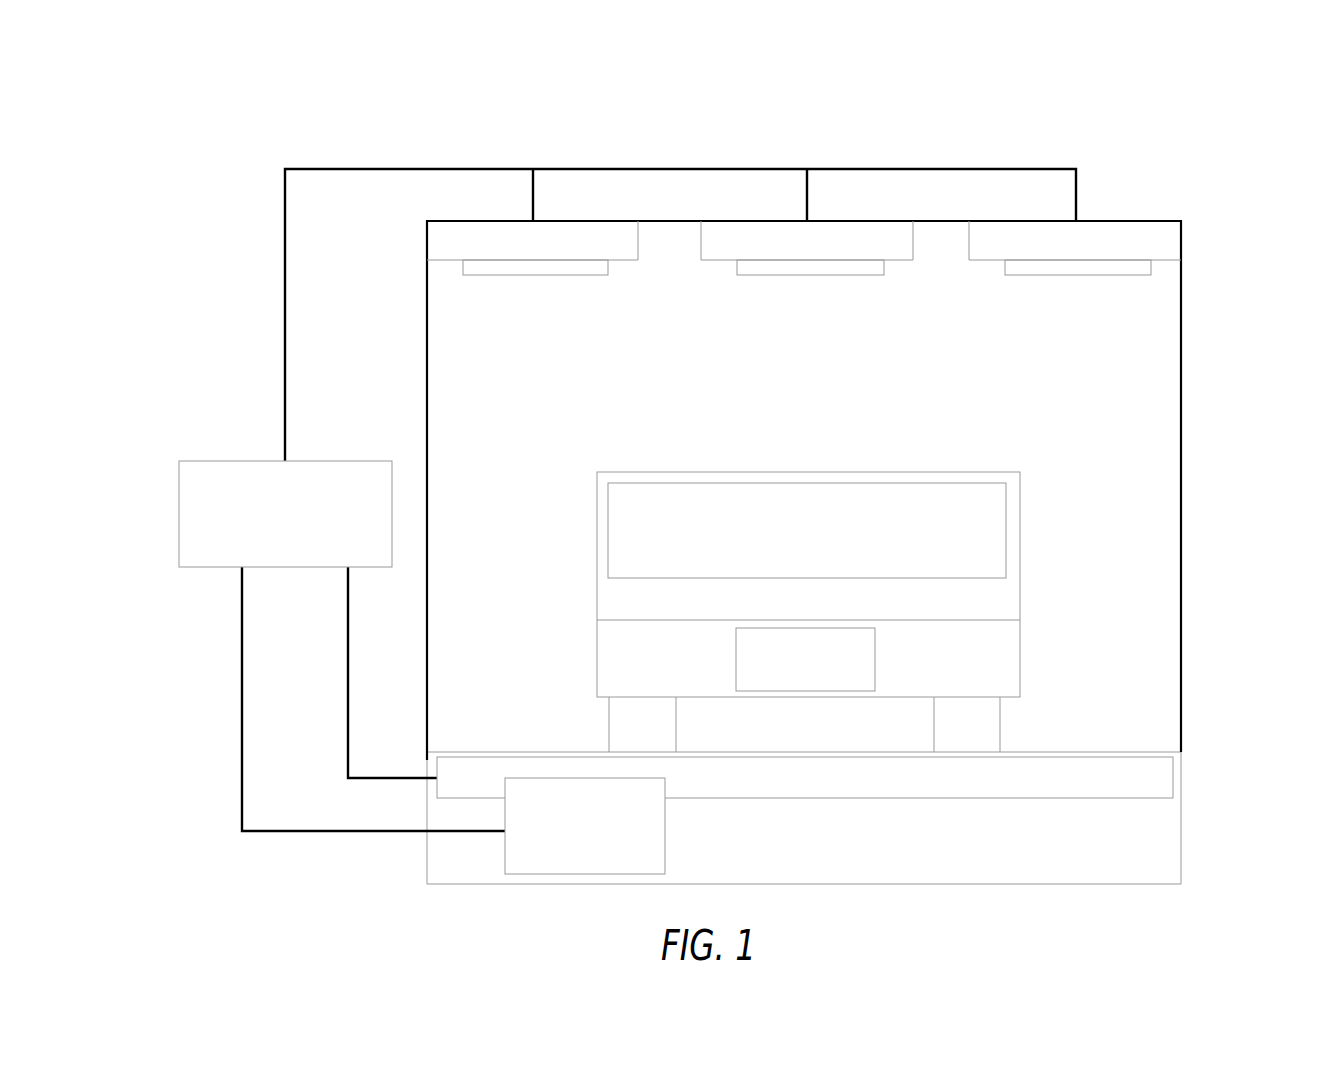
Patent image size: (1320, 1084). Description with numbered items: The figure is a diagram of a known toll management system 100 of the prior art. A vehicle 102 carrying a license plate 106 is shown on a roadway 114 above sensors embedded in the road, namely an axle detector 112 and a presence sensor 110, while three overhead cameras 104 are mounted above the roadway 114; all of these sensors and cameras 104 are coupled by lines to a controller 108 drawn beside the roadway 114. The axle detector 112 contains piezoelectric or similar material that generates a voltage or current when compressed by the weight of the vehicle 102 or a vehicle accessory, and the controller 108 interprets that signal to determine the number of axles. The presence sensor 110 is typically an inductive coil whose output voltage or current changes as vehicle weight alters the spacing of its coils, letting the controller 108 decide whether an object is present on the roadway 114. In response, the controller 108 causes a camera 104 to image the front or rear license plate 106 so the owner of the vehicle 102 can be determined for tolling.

The toll management system 100 is at (1222, 112).
The vehicle 102 is at (607, 597).
The camera 104 is at (428, 245).
The license plate 106 is at (738, 667).
The controller 108 is at (193, 486).
The presence sensor 110 is at (518, 851).
The axle detector 112 is at (1163, 773).
The roadway 114 is at (1173, 838).